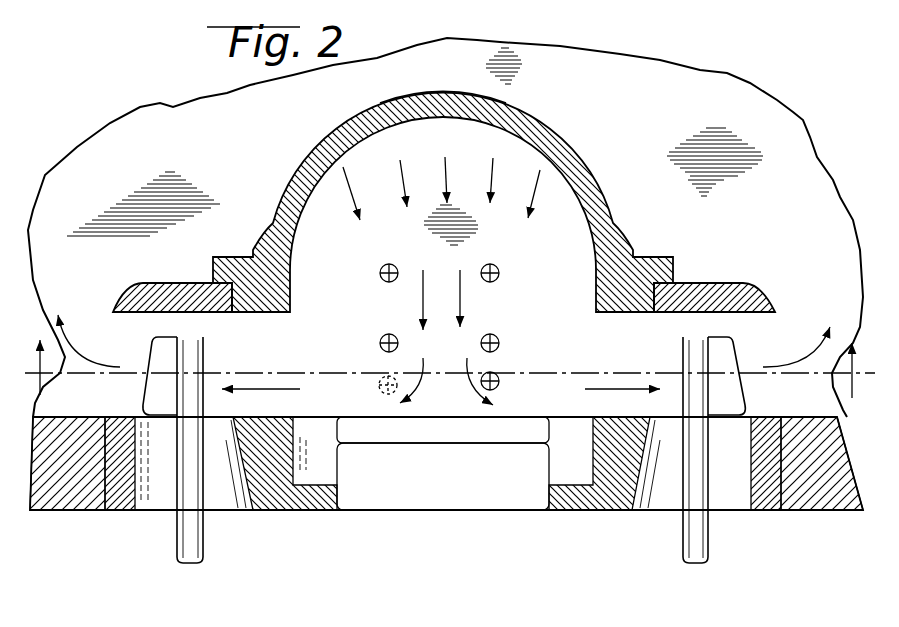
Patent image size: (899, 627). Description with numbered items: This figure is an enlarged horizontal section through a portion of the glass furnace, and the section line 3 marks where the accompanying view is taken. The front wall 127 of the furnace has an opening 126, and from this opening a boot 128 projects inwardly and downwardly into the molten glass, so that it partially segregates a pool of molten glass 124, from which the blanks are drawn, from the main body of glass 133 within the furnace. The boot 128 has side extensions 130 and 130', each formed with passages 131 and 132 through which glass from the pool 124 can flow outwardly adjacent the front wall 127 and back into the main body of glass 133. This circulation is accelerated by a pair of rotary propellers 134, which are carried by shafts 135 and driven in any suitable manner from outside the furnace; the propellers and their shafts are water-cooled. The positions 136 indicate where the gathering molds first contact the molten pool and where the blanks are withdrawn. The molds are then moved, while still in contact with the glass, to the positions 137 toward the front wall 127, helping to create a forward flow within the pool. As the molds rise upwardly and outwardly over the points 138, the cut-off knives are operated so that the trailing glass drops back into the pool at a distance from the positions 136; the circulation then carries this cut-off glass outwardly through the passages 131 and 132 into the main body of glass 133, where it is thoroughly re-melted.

The pool of molten glass 124 is at (397, 160).
The opening 126 is at (406, 501).
The front wall 127 is at (602, 513).
The boot 128 is at (370, 114).
The side extension 130 is at (717, 280).
The side extension 130' is at (160, 283).
The passage 131 is at (277, 316).
The passage 132 is at (128, 324).
The main body of glass 133 is at (768, 128).
The rotary propeller 134 is at (147, 392).
The shaft 135 is at (191, 567).
The positions of first mold contact 136 is at (441, 219).
The positions of mold movement 137 is at (442, 311).
The points of cut-off 138 is at (381, 390).
The section line 3- 3 is at (447, 369).